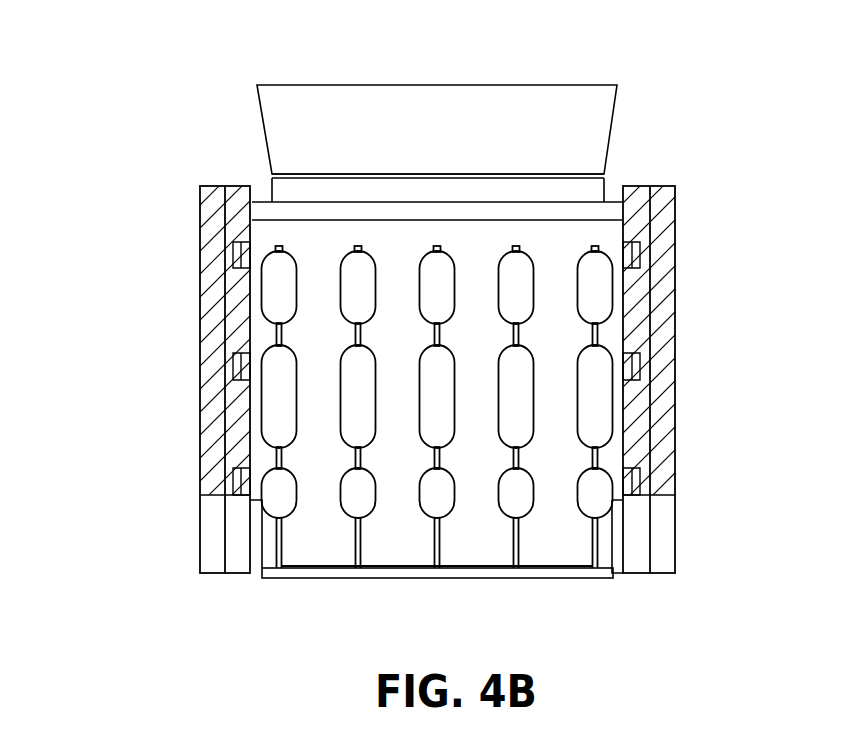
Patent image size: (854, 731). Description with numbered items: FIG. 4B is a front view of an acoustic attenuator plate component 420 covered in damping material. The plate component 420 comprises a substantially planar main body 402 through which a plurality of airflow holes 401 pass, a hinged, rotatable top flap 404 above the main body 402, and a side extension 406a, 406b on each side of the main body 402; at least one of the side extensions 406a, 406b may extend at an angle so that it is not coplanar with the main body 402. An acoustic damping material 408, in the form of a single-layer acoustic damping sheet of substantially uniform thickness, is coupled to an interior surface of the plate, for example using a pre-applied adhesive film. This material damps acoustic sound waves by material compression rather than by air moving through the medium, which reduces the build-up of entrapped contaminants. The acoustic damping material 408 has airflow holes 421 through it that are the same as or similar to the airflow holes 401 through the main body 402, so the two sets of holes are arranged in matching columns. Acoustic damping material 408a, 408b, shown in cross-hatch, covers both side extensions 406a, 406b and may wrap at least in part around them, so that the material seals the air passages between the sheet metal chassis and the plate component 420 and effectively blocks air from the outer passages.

The airflow holes 401 is at (288, 262).
The main body 402 is at (260, 210).
The top flap 404 is at (363, 102).
The side extension 406a is at (200, 393).
The side extension 406b is at (673, 377).
The acoustic damping material 408 is at (573, 557).
The acoustic damping material on side extension 408a is at (200, 330).
The acoustic damping material on side extension 408b is at (673, 307).
The plate component 420 is at (168, 244).
The airflow holes 421 is at (577, 523).